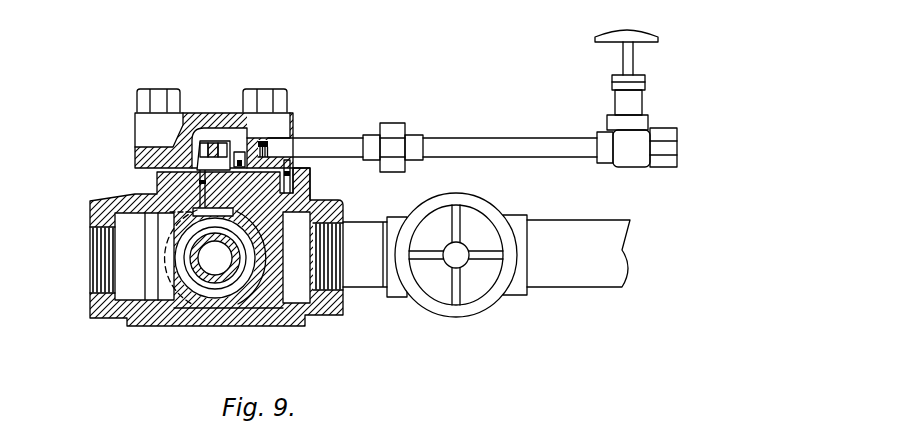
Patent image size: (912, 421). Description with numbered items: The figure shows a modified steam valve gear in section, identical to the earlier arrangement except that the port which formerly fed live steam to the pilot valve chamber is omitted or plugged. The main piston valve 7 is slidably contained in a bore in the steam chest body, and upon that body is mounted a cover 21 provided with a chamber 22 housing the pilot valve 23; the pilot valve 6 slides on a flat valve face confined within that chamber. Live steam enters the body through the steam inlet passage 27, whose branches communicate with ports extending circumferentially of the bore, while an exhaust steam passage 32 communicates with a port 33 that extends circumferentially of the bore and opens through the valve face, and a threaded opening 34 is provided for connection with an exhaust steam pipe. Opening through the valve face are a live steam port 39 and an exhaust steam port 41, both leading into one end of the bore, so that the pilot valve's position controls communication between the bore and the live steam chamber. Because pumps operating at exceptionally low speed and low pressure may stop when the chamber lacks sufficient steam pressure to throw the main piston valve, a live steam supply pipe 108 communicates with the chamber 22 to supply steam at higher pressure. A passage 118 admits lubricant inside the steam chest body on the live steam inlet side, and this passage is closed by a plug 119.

The pilot valve 6 is at (198, 143).
The main piston valve 7 is at (213, 287).
The cover 21 is at (197, 122).
The chamber 22 is at (228, 140).
The pilot valve 23 is at (262, 144).
The steam inlet passage 27 is at (337, 209).
The exhaust steam passage 32 is at (128, 277).
The port 33 is at (193, 215).
The threaded opening 34 is at (102, 269).
The live steam port 39 is at (302, 223).
The exhaust steam port 41 is at (148, 242).
The live steam supply pipe 108 is at (343, 146).
The passage 118 is at (310, 192).
The plug 119 is at (293, 173).